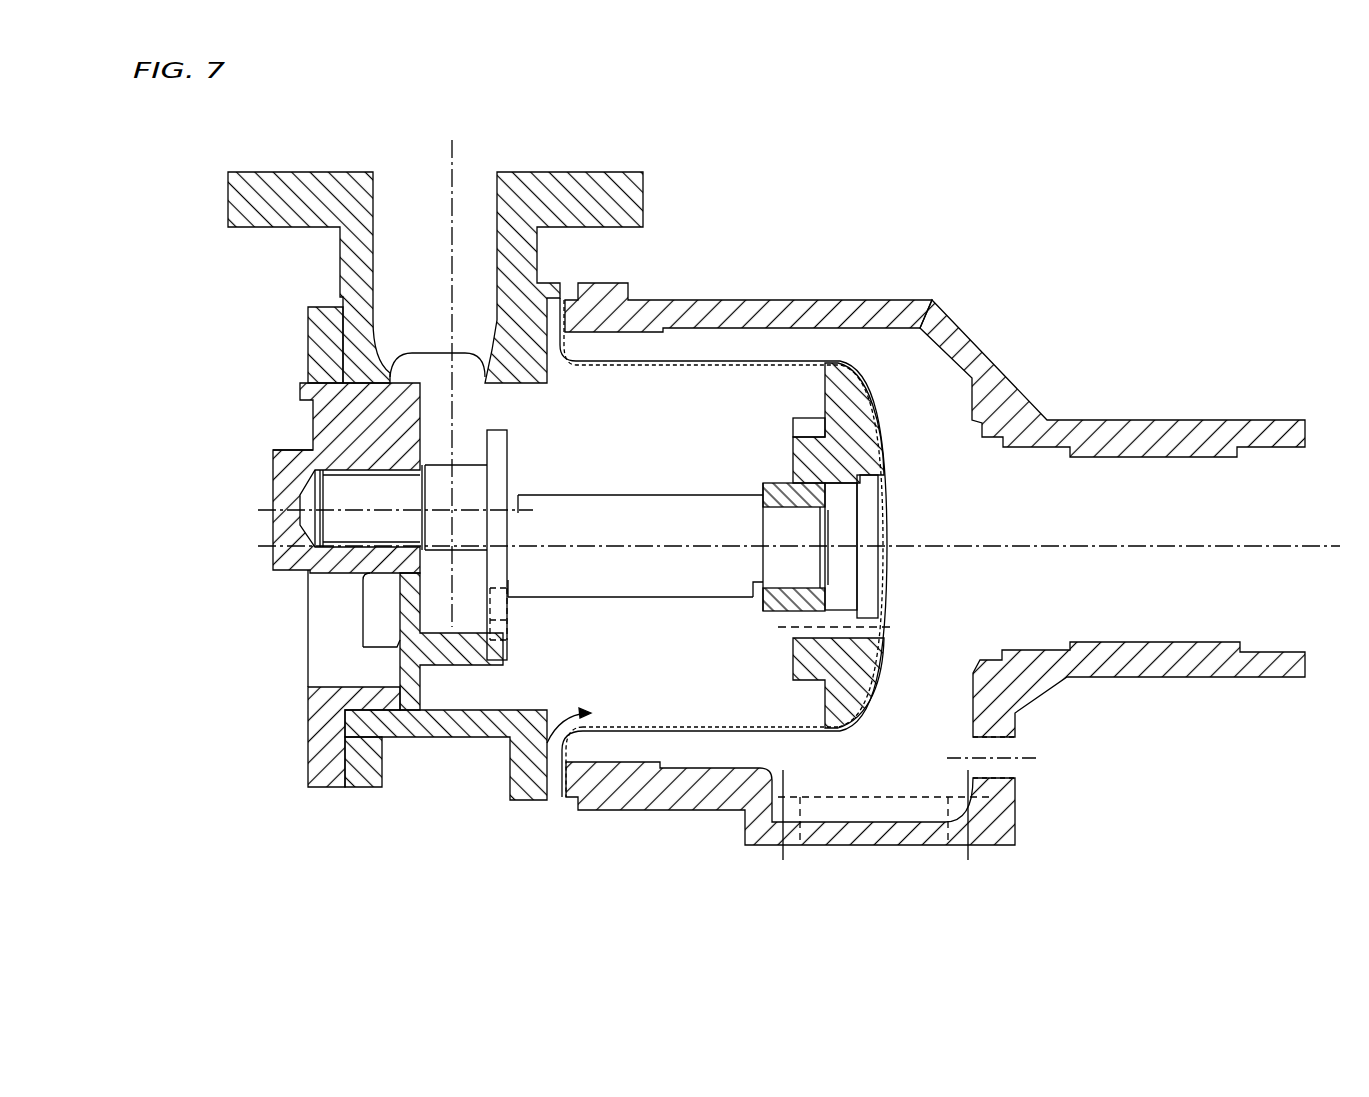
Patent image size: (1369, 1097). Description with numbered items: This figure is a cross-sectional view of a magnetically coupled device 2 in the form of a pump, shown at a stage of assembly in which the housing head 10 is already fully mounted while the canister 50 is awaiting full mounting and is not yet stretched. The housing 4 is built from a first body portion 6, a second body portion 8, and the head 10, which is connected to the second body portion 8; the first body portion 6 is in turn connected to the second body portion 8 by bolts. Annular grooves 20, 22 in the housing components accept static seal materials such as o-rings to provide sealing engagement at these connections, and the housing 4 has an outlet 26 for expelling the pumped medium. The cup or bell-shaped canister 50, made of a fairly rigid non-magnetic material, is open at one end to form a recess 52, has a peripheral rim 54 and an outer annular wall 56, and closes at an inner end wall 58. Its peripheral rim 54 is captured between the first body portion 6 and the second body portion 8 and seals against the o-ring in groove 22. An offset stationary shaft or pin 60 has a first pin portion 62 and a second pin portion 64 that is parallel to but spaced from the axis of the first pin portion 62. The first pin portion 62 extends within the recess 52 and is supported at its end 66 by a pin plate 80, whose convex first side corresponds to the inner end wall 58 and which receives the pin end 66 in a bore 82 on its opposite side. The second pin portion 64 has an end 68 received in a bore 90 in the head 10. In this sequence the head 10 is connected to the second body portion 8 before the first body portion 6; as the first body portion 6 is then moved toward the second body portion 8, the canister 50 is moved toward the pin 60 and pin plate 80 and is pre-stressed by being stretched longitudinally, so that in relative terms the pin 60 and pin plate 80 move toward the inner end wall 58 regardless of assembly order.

The magnetically coupled device 2 is at (1058, 276).
The housing 4 is at (869, 292).
The first body portion 6 is at (968, 340).
The second body portion 8 is at (373, 789).
The head 10 is at (316, 789).
The annular groove 20 is at (390, 490).
The annular groove 22 is at (533, 780).
The outlet 26 is at (477, 190).
The canister 50 is at (803, 742).
The recess 52 is at (520, 757).
The peripheral rim 54 is at (540, 780).
The outer annular wall 56 is at (715, 733).
The inner end wall 58 is at (880, 667).
The offset stationary shaft or pin 60 is at (613, 488).
The first pin portion 62 is at (680, 513).
The second pin portion 64 is at (343, 467).
The end 66 is at (780, 517).
The end 68 is at (338, 530).
The pin plate 80 is at (852, 407).
The bore 82 is at (805, 486).
The bore 90 is at (310, 443).